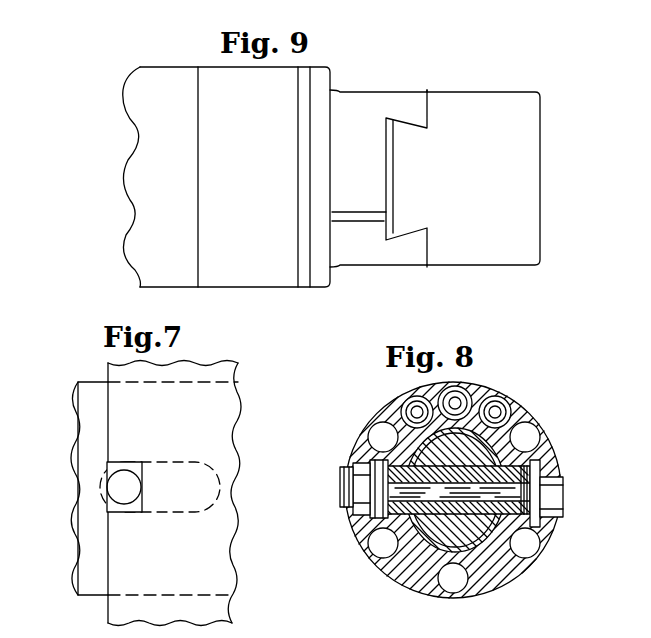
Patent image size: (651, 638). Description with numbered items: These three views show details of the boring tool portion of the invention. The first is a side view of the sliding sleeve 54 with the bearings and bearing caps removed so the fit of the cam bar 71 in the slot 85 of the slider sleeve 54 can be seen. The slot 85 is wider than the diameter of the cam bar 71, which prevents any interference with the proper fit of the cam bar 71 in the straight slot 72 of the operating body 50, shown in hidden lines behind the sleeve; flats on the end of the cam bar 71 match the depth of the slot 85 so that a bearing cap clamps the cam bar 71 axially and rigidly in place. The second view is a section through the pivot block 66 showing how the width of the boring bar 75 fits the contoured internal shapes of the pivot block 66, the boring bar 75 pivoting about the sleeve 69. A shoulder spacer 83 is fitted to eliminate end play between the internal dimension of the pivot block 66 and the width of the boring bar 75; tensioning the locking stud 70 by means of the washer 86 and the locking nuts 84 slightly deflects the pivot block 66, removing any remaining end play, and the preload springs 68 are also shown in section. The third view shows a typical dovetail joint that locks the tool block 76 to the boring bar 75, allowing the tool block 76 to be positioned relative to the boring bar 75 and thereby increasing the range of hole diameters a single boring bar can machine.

In FIG. 7, the operating body 50 is at (85, 400).
In FIG. 7, the sliding sleeve 54 is at (200, 370).
In FIG. 8, the pivot block 66 is at (512, 575).
In FIG. 8, the preload springs 68 is at (503, 402).
In FIG. 8, the sleeve 69 is at (467, 517).
In FIG. 8, the locking stud 70 is at (345, 497).
In FIG. 7, the cam bar 71 is at (120, 501).
In FIG. 7, the straight slot 72 is at (180, 515).
In FIG. 9, the boring bar 75 is at (355, 95).
In FIG. 8, the boring bar 75 is at (450, 530).
In FIG. 9, the tool block 76 is at (460, 97).
In FIG. 8, the shoulder spacer 83 is at (367, 458).
In FIG. 8, the locking nuts 84 is at (350, 465).
In FIG. 7, the slot 85 is at (112, 463).
In FIG. 8, the washer 86 is at (553, 450).